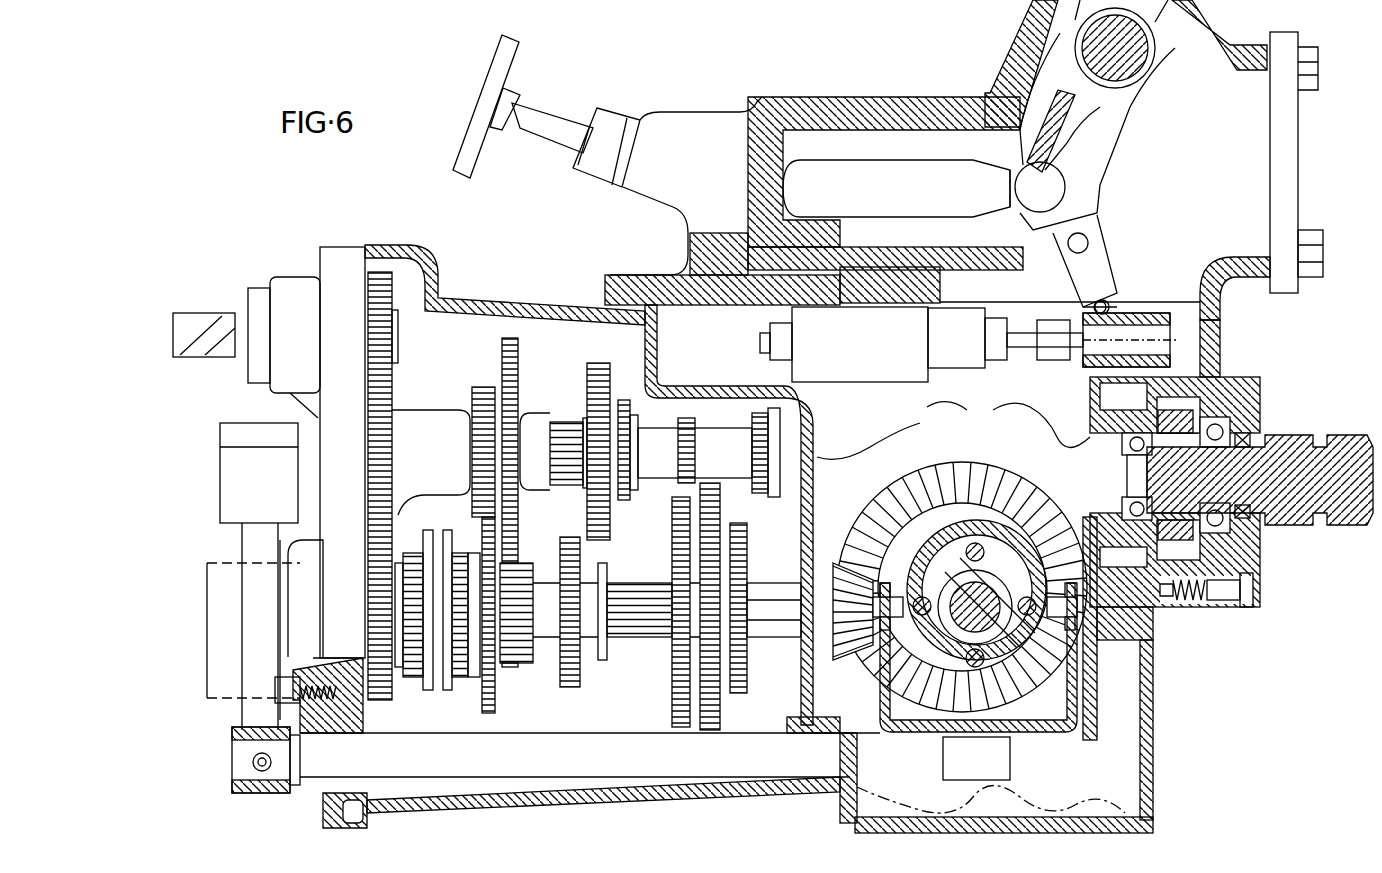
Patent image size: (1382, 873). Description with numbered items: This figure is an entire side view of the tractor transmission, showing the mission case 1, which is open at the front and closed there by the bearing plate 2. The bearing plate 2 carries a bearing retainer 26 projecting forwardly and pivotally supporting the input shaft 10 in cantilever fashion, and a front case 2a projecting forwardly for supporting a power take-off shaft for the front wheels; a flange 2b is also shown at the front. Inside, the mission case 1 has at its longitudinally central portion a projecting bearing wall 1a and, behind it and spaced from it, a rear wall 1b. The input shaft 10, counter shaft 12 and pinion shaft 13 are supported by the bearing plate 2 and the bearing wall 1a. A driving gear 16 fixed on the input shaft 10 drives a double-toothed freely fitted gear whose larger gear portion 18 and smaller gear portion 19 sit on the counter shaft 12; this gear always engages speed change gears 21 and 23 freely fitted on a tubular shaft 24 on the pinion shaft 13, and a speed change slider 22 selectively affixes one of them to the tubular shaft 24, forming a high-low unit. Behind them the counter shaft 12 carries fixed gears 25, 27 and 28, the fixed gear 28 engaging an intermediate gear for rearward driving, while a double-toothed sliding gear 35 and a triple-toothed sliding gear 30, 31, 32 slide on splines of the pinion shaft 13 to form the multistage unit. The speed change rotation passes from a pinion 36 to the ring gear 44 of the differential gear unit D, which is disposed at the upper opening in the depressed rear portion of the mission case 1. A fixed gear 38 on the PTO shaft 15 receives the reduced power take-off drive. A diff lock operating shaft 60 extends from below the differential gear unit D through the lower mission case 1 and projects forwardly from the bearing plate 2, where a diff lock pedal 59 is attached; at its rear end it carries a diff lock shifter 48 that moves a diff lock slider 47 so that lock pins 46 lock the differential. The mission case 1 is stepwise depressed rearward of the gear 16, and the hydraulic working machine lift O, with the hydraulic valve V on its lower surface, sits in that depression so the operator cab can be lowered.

The mission case 1 is at (463, 300).
The bearing wall 1a is at (814, 450).
The rear wall 1b is at (1085, 648).
The bearing plate 2 is at (339, 452).
The front case 2a is at (203, 610).
The flange 2b is at (290, 277).
The input shaft 10 is at (213, 312).
The counter shaft 12 is at (657, 470).
The pinion shaft 13 is at (783, 583).
The PTO shaft 15 is at (1260, 480).
The driving gear 16 is at (395, 300).
The gear portion of greater diameter 18 is at (398, 410).
The gear portion of smaller diameter 19 is at (480, 387).
The speed change gear 21 is at (383, 700).
The speed change slider 22 is at (438, 690).
The speed change gear 23 is at (503, 713).
The tubular shaft 24 is at (520, 663).
The fixed gear 25 is at (520, 383).
The bearing retainer 26 is at (592, 363).
The fixed gear 27 is at (745, 420).
The fixed gear 28 is at (766, 393).
The triple-toothed sliding gear portion 30 is at (672, 672).
The triple-toothed sliding gear portion 31 is at (720, 712).
The triple-toothed sliding gear portion 32 is at (747, 690).
The double-toothed sliding gear portion 35 is at (583, 680).
The pinion 36 is at (846, 605).
The fixed gear 38 is at (1125, 606).
The ring gear 44 is at (1030, 478).
The lock pins 46 is at (973, 667).
The diff lock slider 47 is at (1030, 640).
The diff lock shifter 48 is at (1033, 785).
The diff lock pedal 59 is at (282, 562).
The diff lock operating shaft 60 is at (575, 764).
The hydraulic valve V is at (1017, 337).
The differential gear unit D is at (984, 453).
The hydraulic working machine lift O is at (898, 93).